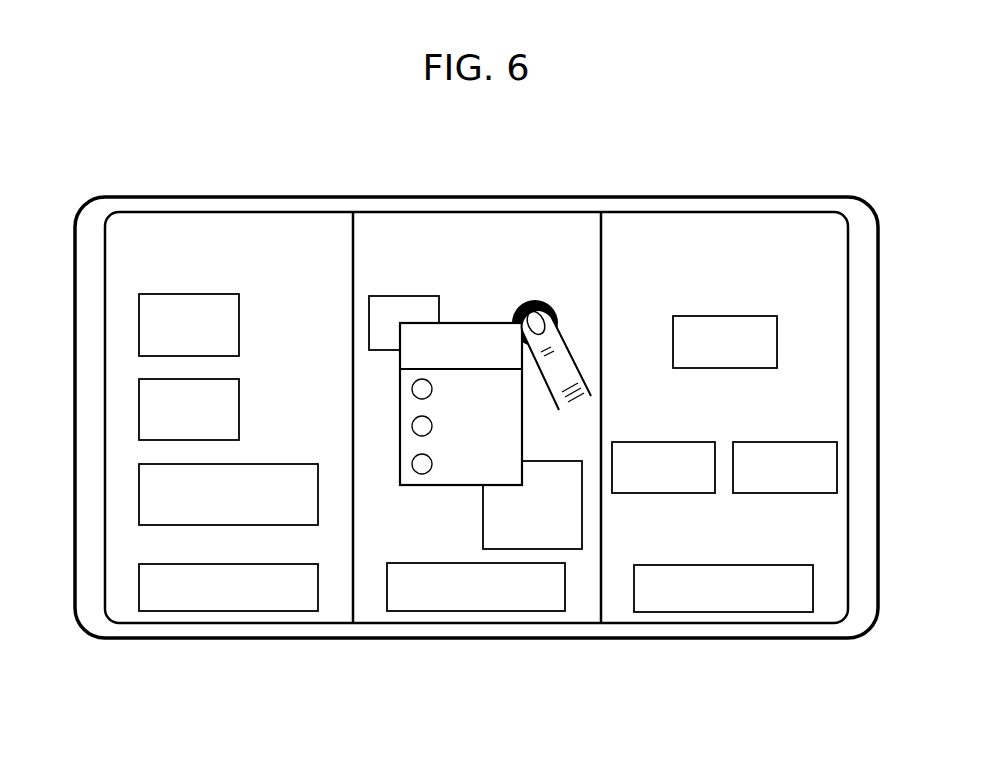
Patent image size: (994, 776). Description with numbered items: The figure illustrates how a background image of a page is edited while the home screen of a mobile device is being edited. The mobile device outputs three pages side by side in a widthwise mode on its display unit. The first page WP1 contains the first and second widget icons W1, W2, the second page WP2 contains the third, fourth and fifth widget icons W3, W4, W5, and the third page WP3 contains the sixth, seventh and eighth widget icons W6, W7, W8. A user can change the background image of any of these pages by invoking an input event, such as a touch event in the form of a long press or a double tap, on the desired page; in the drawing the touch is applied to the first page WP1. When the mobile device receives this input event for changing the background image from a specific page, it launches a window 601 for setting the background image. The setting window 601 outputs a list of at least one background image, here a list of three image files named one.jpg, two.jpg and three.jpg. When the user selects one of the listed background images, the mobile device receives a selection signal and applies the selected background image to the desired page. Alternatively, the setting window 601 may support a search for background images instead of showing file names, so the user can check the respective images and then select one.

The window for setting a background image 601 is at (460, 323).
The first page WP1 is at (517, 276).
The second page WP2 is at (766, 276).
The third page WP3 is at (337, 276).
The first widget icon W1 is at (404, 323).
The second widget icon W2 is at (532, 505).
The third widget icon W3 is at (725, 342).
The fourth widget icon W4 is at (663, 467).
The fifth widget icon W5 is at (785, 467).
The sixth widget icon W6 is at (189, 325).
The seventh widget icon W7 is at (189, 409).
The eighth widget icon W8 is at (228, 494).